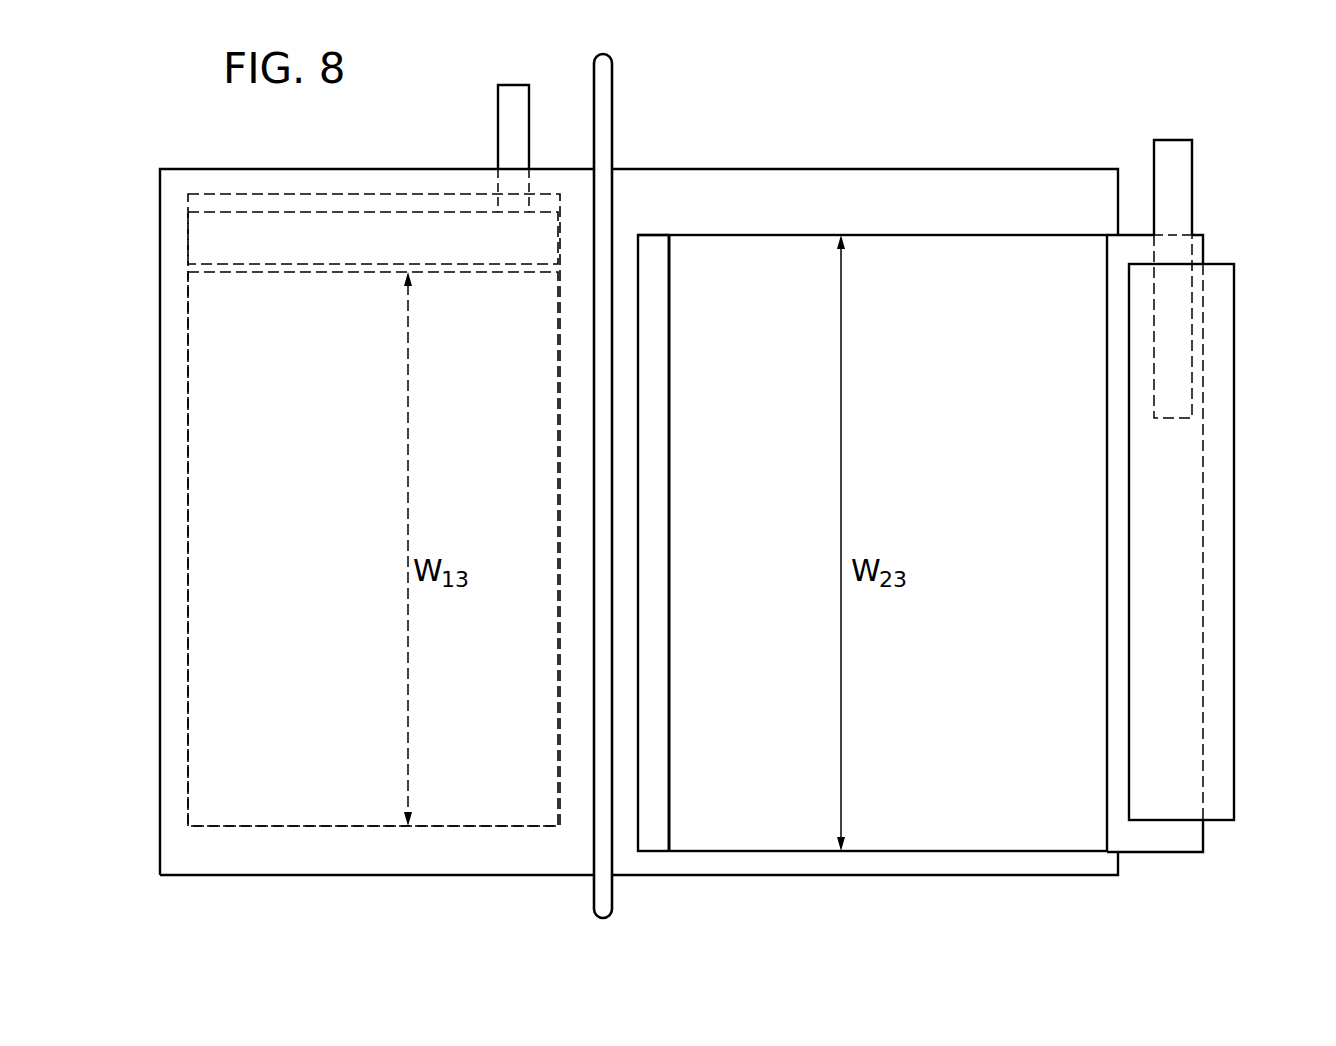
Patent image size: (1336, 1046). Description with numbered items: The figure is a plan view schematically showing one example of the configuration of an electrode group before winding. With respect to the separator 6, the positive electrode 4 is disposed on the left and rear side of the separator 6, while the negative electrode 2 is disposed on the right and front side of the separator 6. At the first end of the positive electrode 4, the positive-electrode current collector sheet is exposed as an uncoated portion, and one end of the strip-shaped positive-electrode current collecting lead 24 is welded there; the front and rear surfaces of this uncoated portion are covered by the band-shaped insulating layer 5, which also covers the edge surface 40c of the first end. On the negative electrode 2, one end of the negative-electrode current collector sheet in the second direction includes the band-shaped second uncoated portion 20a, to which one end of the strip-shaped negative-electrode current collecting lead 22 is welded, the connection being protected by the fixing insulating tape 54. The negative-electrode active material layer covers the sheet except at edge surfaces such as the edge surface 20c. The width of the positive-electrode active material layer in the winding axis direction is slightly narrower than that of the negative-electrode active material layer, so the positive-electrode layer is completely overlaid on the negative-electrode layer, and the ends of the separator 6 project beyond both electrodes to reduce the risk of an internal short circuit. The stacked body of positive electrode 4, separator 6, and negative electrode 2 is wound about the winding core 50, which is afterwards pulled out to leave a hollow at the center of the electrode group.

The negative electrode 2 is at (938, 835).
The positive electrode 4 is at (205, 550).
The insulating layer 5 is at (215, 233).
The separator 6 is at (921, 196).
The second uncoated portion (A) 20a is at (1170, 832).
The edge surface 20c is at (751, 233).
The negative-electrode current collecting lead 22 is at (1178, 176).
The positive-electrode current collecting lead 24 is at (515, 98).
The edge surface 40c is at (294, 213).
The winding core 50 is at (600, 82).
The insulating tape 54 is at (1217, 510).